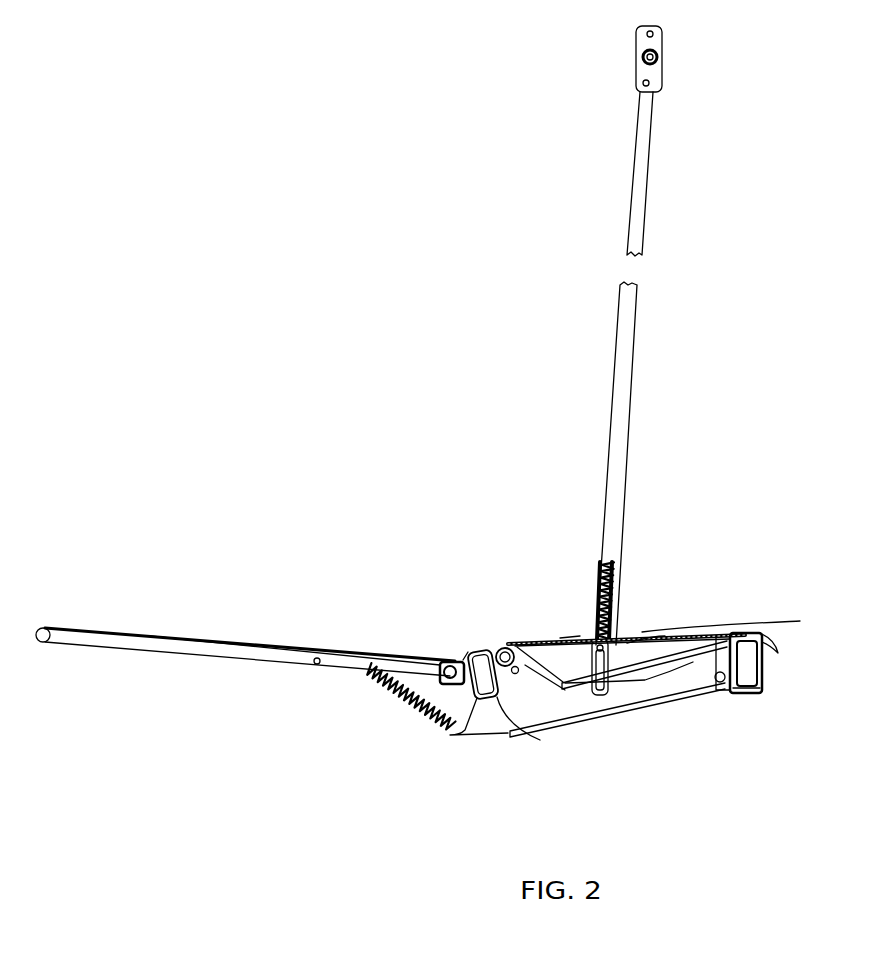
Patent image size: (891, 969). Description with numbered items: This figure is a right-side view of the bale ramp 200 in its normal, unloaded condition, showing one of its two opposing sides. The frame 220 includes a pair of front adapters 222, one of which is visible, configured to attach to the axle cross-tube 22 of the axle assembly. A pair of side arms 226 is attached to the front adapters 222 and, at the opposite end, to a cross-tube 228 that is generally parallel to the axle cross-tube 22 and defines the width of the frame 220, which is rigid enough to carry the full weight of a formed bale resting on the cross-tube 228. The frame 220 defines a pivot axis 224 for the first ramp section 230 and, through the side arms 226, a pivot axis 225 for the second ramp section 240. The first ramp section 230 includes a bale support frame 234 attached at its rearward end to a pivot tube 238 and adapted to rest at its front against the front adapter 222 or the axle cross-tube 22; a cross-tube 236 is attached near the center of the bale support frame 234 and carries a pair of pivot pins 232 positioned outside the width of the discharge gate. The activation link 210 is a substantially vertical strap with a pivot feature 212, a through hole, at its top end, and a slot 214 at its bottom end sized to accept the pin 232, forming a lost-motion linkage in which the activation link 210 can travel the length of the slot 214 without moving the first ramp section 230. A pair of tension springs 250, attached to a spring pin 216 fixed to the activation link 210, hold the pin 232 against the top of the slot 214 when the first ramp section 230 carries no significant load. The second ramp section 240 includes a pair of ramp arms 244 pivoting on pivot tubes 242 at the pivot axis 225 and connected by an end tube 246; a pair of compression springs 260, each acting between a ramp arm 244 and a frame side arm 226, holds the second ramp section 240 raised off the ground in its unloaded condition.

The bale ramp 200 is at (358, 568).
The activation link 210 is at (628, 377).
The pivot feature 212 is at (658, 57).
The slot 214 is at (770, 649).
The spring pin 216 is at (615, 558).
The axle cross-tube 22 is at (746, 693).
The frame 220 is at (495, 722).
The front adapter 222 is at (763, 668).
The pivot axis 224 is at (511, 645).
The pivot axis 225 is at (463, 660).
The side arm 226 is at (673, 683).
The cross-tube 228 is at (527, 667).
The first ramp section 230 is at (800, 621).
The pivot pin 232 is at (624, 636).
The bale support frame 234 is at (568, 640).
The cross-tube 236 is at (657, 640).
The pivot tube 238 is at (497, 648).
The second ramp section 240 is at (235, 640).
The pivot tube 242 is at (445, 660).
The ramp arm 244 is at (212, 650).
The end tube 246 is at (43, 641).
The tension spring 250 is at (641, 578).
The compression spring 260 is at (410, 702).